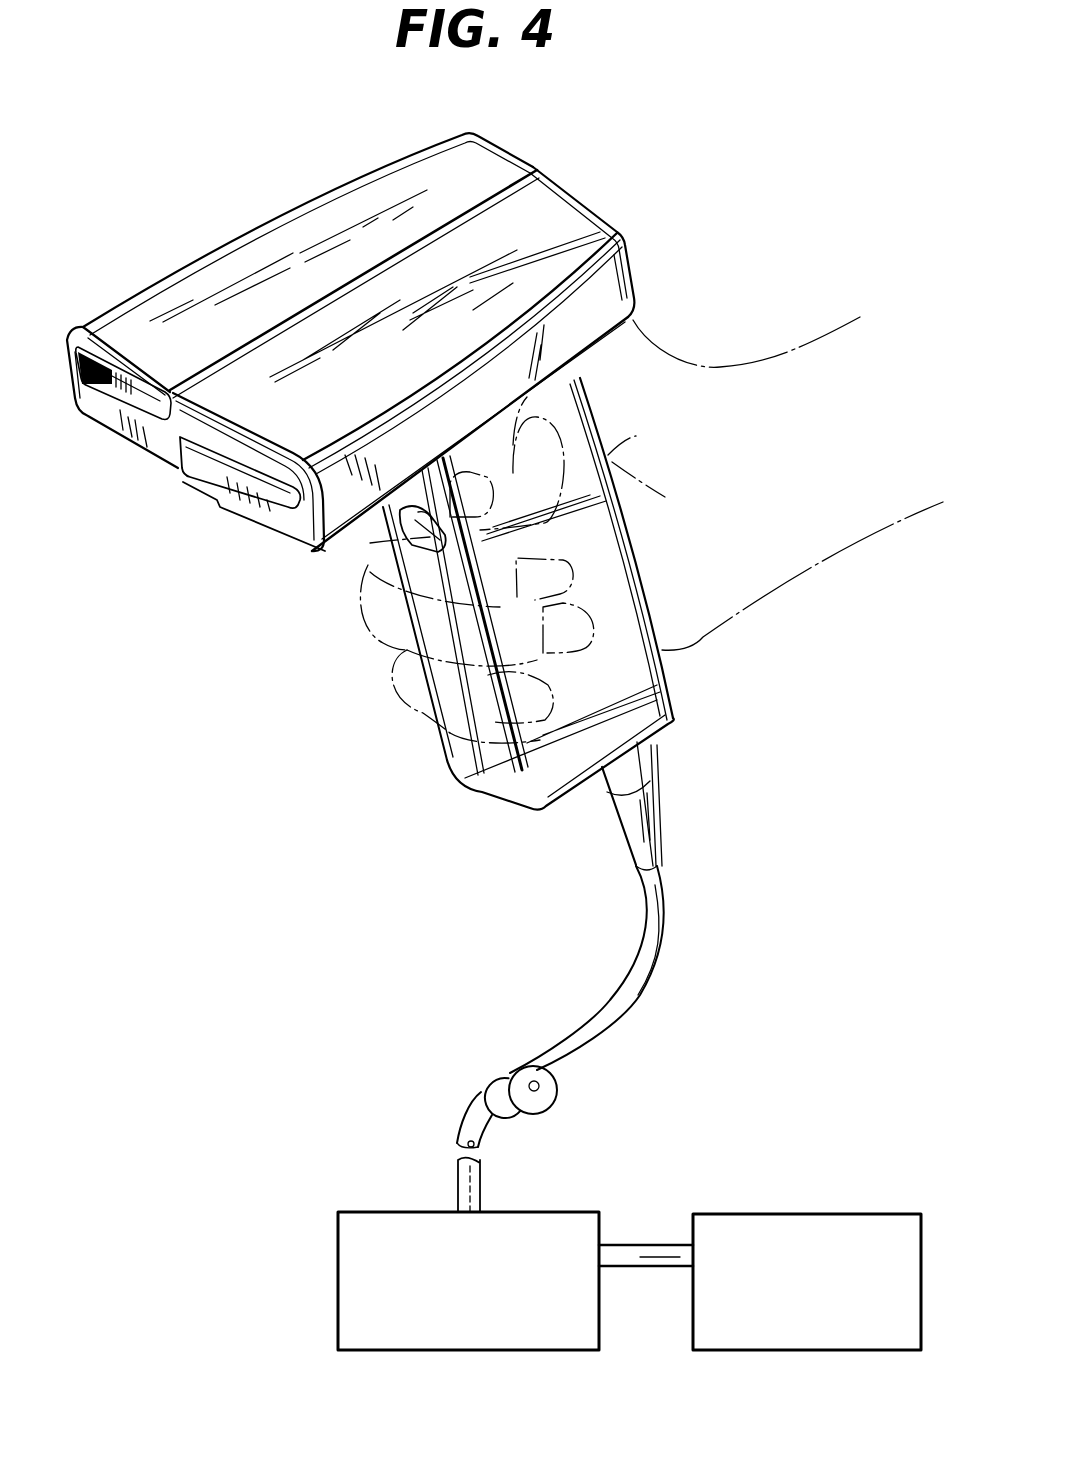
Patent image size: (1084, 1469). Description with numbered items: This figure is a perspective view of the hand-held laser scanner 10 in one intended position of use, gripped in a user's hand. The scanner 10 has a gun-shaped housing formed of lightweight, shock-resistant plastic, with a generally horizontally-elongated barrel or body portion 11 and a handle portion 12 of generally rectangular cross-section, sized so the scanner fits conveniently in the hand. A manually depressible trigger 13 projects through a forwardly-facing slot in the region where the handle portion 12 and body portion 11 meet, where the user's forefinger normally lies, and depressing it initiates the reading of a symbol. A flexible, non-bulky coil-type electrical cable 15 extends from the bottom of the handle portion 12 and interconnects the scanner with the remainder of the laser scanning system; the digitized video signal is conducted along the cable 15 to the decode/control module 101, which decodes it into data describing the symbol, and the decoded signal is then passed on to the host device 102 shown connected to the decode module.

The hand-held laser scanner 10 is at (699, 238).
The body portion 11 is at (592, 195).
The handle portion 12 is at (673, 700).
The trigger 13 is at (440, 538).
The electrical cable 15 is at (650, 831).
The decode/control module 101 is at (587, 1212).
The host device 102 is at (863, 1214).